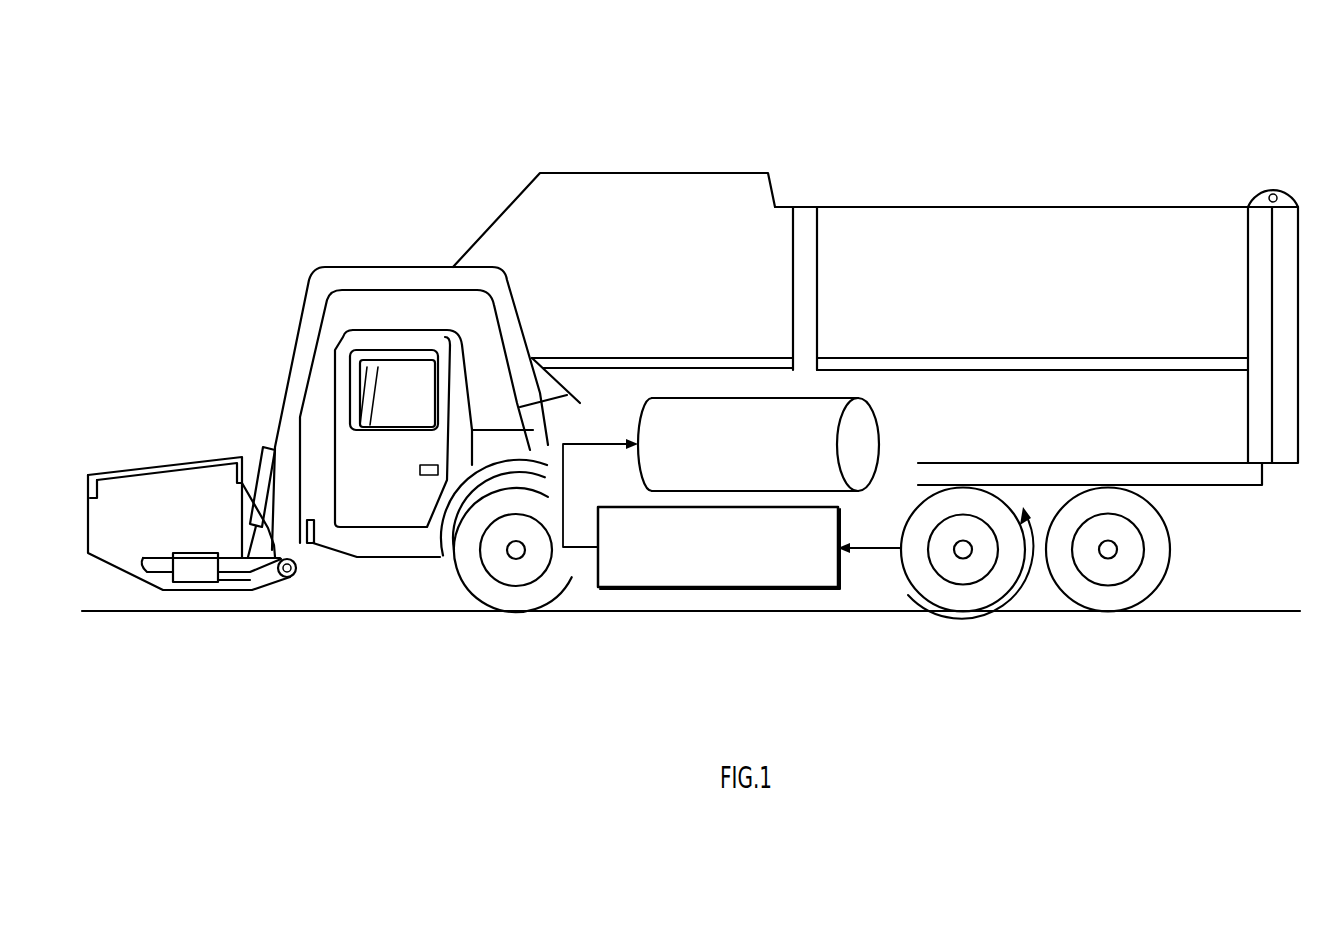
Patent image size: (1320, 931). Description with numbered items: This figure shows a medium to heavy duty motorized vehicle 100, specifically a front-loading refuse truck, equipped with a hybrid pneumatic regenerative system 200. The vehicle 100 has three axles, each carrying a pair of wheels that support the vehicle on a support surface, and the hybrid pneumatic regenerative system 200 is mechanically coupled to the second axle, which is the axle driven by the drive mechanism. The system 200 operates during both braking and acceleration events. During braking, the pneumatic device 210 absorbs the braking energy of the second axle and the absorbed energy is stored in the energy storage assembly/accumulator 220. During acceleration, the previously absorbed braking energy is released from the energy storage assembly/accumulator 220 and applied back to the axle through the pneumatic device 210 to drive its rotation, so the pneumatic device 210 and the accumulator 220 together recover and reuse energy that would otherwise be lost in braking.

The motorized vehicle 100 is at (266, 160).
The hybrid pneumatic regenerative system 200 is at (622, 680).
The pneumatic device 210 is at (775, 587).
The energy storage assembly/accumulator 220 is at (880, 433).